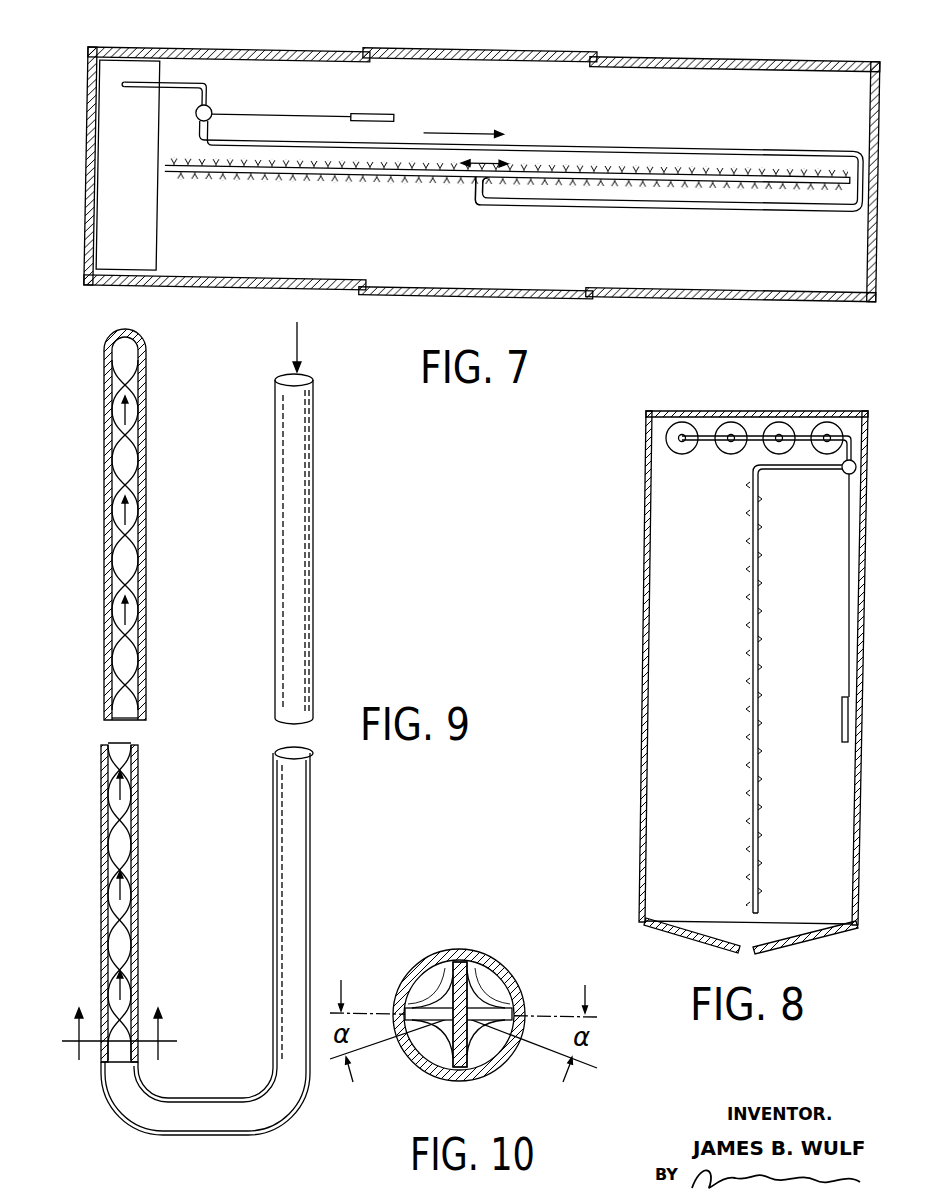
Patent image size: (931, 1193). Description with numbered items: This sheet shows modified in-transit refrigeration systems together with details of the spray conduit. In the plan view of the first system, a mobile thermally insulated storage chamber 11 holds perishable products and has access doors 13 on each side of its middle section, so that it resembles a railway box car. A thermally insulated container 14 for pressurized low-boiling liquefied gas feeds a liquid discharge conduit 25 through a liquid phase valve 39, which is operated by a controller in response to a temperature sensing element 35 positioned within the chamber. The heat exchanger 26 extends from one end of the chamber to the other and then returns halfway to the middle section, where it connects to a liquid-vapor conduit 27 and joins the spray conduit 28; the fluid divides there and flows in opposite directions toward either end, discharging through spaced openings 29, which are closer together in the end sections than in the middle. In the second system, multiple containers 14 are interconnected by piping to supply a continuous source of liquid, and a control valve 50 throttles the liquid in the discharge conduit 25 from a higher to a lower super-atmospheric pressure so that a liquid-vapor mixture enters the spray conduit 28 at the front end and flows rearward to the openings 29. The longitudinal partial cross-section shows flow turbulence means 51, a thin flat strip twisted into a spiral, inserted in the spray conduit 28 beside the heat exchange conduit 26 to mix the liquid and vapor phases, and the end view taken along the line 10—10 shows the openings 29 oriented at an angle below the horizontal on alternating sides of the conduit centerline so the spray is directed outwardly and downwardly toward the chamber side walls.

In FIG. 9, the section line 10— 10 is at (121, 1036).
In FIG. 7, the storage chamber 11 is at (658, 47).
In FIG. 8, the storage chamber 11 is at (636, 612).
In FIG. 7, the doors 13 is at (515, 43).
In FIG. 8, the doors 13 is at (698, 937).
In FIG. 7, the container 14 is at (148, 222).
In FIG. 8, the container 14 is at (782, 430).
In FIG. 7, the liquid discharge conduit 25 is at (177, 83).
In FIG. 8, the liquid discharge conduit 25 is at (861, 449).
In FIG. 7, the heat exchanger 26 is at (589, 140).
In FIG. 9, the heat exchanger 26 is at (317, 647).
In FIG. 7, the liquid-vapor conduit 27 is at (482, 181).
In FIG. 7, the spray conduit 28 is at (408, 165).
In FIG. 8, the spray conduit 28 is at (748, 705).
In FIG. 9, the spray conduit 28 is at (148, 491).
In FIG. 10, the spray conduit 28 is at (507, 980).
In FIG. 7, the openings 29 is at (336, 170).
In FIG. 8, the openings 29 is at (759, 535).
In FIG. 9, the openings 29 is at (105, 512).
In FIG. 10, the openings 29 is at (406, 1038).
In FIG. 7, the temperature sensing element 35 is at (378, 109).
In FIG. 8, the temperature sensing element 35 is at (840, 722).
In FIG. 7, the liquid phase valve 39 is at (196, 111).
In FIG. 8, the control valve 50 is at (843, 473).
In FIG. 9, the flow turbulence means 51 is at (122, 632).
In FIG. 10, the flow turbulence means 51 is at (452, 985).